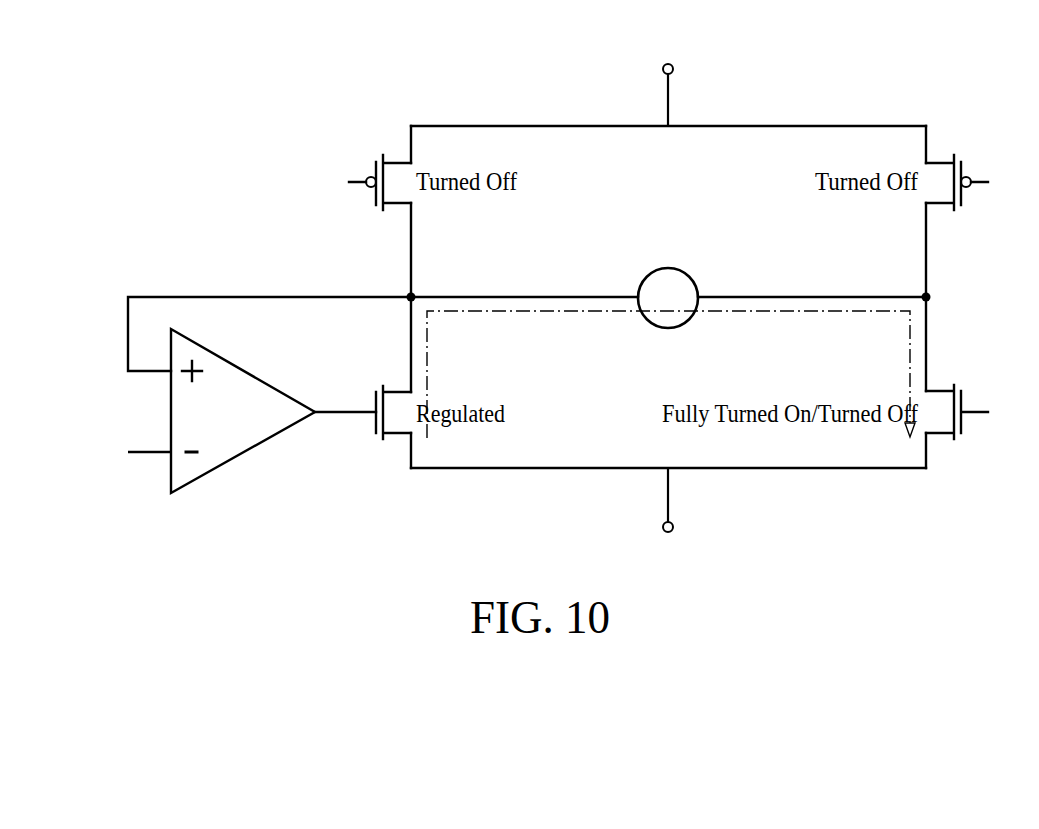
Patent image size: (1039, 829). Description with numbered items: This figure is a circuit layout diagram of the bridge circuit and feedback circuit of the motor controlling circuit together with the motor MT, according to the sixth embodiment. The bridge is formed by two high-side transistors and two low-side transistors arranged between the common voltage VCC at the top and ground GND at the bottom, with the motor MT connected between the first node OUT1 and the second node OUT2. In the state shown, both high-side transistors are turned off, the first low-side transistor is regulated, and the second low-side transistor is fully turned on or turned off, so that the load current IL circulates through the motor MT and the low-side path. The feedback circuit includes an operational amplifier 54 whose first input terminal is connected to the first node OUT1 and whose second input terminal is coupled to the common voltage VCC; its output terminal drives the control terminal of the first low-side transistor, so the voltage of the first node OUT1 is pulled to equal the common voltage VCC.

The operational amplifier 54 is at (243, 457).
The motor MT is at (668, 271).
The load current IL is at (671, 374).
The first node OUT1 is at (372, 281).
The second node OUT2 is at (966, 281).
The common voltage VCC is at (381, 249).
The ground GND is at (668, 518).